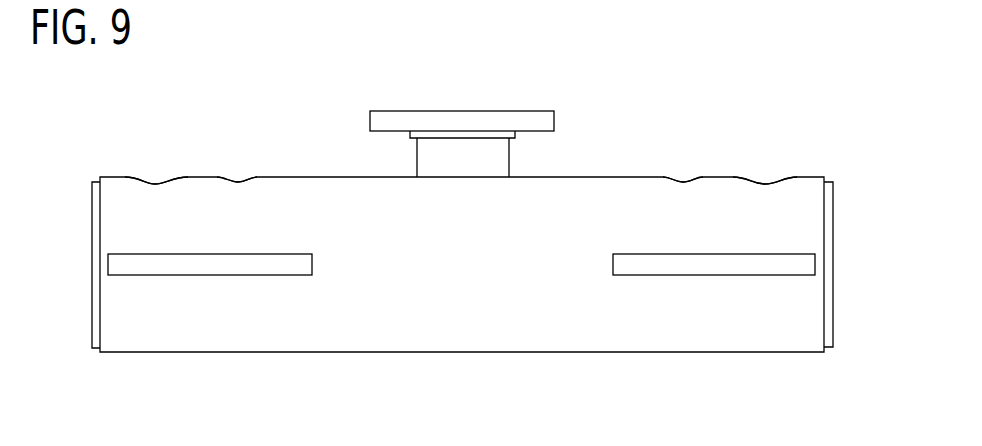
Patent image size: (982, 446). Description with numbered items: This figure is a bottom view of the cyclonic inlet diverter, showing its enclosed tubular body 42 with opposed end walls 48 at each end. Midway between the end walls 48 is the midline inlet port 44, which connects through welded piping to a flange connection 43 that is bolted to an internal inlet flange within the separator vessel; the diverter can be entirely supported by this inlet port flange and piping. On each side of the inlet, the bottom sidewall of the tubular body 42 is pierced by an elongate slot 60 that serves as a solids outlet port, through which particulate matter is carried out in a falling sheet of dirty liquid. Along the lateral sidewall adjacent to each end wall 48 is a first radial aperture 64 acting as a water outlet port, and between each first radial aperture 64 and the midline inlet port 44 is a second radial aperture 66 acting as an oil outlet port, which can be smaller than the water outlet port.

The tubular body 42 is at (454, 388).
The flange connection 43 is at (554, 122).
The midline inlet port 44 is at (463, 83).
The end wall 48 is at (93, 264).
The slot 60 is at (217, 263).
The first radial aperture 64 is at (159, 152).
The second radial aperture 66 is at (241, 152).